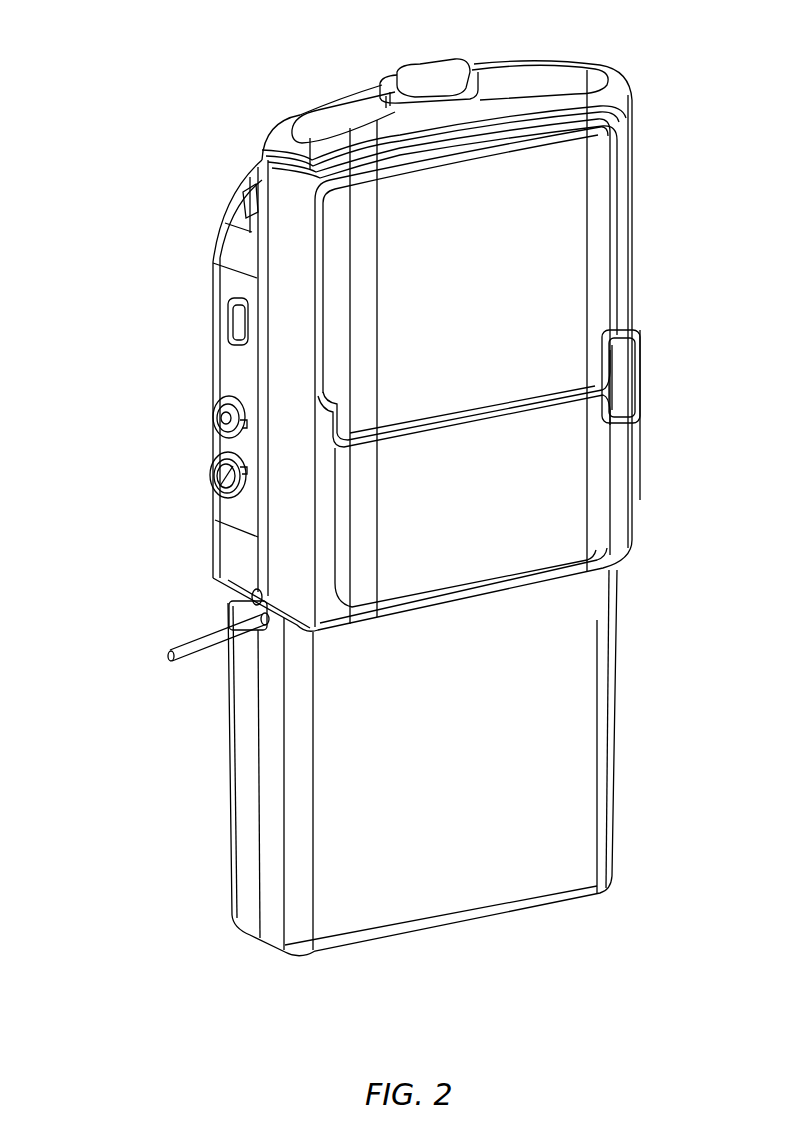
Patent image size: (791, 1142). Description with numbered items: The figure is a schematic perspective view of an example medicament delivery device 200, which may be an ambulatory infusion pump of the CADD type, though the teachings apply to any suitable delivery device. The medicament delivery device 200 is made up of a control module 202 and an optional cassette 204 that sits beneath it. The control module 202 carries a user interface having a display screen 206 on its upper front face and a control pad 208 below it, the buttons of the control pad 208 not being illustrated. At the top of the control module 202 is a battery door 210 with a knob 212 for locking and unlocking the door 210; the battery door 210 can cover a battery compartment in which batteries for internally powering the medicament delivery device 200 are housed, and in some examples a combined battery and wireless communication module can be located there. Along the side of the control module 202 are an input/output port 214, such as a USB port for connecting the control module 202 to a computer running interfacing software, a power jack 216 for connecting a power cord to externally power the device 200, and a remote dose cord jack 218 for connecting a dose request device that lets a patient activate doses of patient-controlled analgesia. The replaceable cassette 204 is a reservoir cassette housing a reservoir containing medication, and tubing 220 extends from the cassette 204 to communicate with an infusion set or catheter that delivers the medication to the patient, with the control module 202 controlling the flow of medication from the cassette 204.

The medicament delivery device 200 is at (139, 128).
The control module 202 is at (624, 271).
The cassette 204 is at (590, 736).
The display screen 206 is at (570, 211).
The control pad 208 is at (527, 493).
The battery door 210 is at (575, 76).
The knob 212 is at (455, 68).
The input/output port 214 is at (236, 325).
The power jack 216 is at (218, 423).
The remote dose cord jack 218 is at (218, 485).
The tubing 220 is at (205, 648).